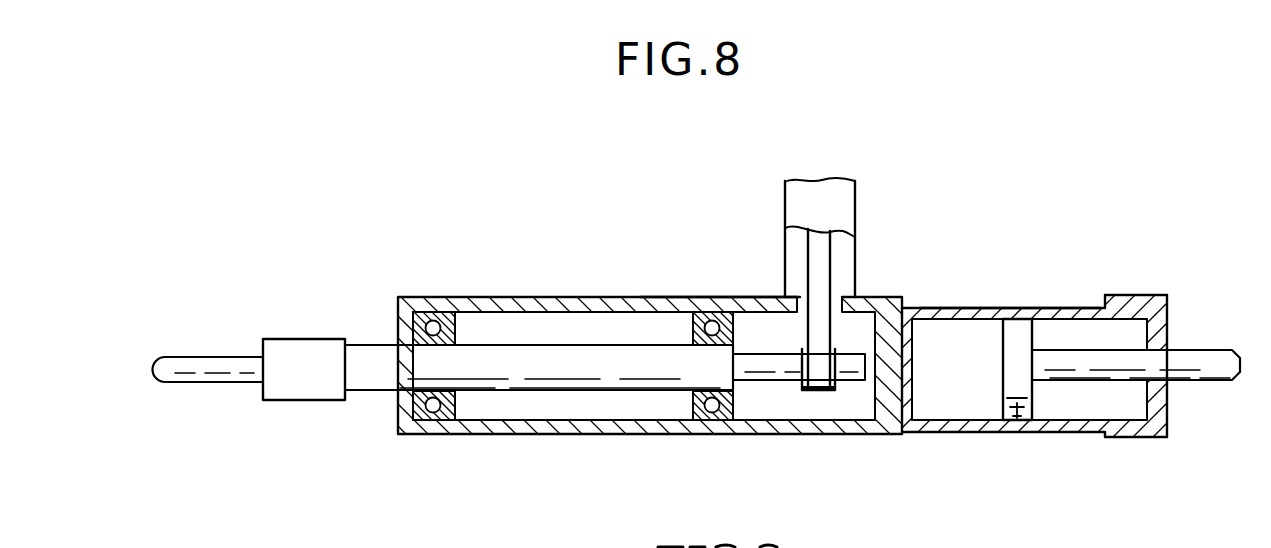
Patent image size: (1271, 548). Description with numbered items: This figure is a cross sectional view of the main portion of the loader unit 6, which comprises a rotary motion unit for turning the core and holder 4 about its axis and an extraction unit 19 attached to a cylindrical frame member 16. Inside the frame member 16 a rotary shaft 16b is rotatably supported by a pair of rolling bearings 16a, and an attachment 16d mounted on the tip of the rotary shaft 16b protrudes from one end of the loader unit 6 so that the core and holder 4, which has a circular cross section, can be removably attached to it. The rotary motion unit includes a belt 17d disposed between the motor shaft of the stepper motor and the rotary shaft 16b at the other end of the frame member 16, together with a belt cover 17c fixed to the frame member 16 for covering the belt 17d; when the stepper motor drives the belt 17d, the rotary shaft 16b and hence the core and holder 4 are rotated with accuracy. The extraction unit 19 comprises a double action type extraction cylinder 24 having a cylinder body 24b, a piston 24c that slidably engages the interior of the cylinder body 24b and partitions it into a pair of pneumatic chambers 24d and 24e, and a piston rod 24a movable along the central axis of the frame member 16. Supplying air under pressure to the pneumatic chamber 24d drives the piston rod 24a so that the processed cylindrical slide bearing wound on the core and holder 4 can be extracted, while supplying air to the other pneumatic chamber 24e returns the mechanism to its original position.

The core and holder 4 is at (200, 373).
The loader unit 6 is at (712, 298).
The frame member 16 is at (515, 298).
The rolling bearings 16a is at (435, 408).
The rotary shaft 16b is at (587, 357).
The attachment 16d is at (290, 393).
The belt cover 17c is at (835, 206).
The belt 17d is at (815, 257).
The extraction unit 19 is at (1100, 296).
The extraction cylinder 24 is at (994, 306).
The piston rod 24a is at (1210, 370).
The cylinder body 24b is at (970, 432).
The piston 24c is at (1017, 410).
The pneumatic chamber 24d is at (1113, 405).
The pneumatic chamber 24e is at (932, 392).